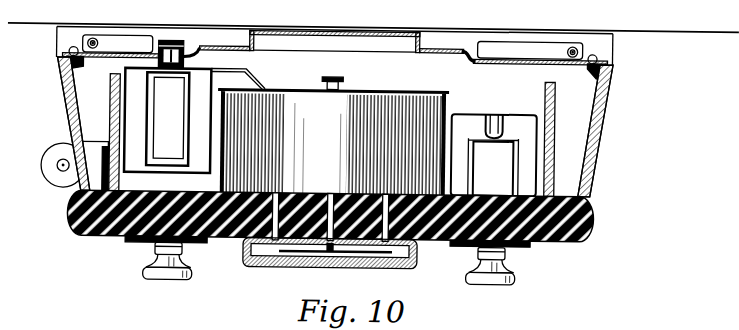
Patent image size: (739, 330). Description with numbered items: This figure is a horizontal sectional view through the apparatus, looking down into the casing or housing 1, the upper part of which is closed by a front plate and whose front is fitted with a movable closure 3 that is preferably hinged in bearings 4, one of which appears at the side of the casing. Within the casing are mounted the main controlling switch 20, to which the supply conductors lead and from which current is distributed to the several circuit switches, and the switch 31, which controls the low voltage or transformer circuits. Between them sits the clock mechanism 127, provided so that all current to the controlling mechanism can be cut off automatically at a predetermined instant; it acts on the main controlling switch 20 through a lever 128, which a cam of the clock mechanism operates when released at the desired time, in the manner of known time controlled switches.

The casing or housing 1 is at (66, 113).
The movable closure 3 is at (596, 202).
The bearings 4 is at (50, 186).
The main controlling switch 20 is at (168, 106).
The switch 31 is at (494, 155).
The clock mechanism 127 is at (333, 136).
The lever 128 is at (258, 78).